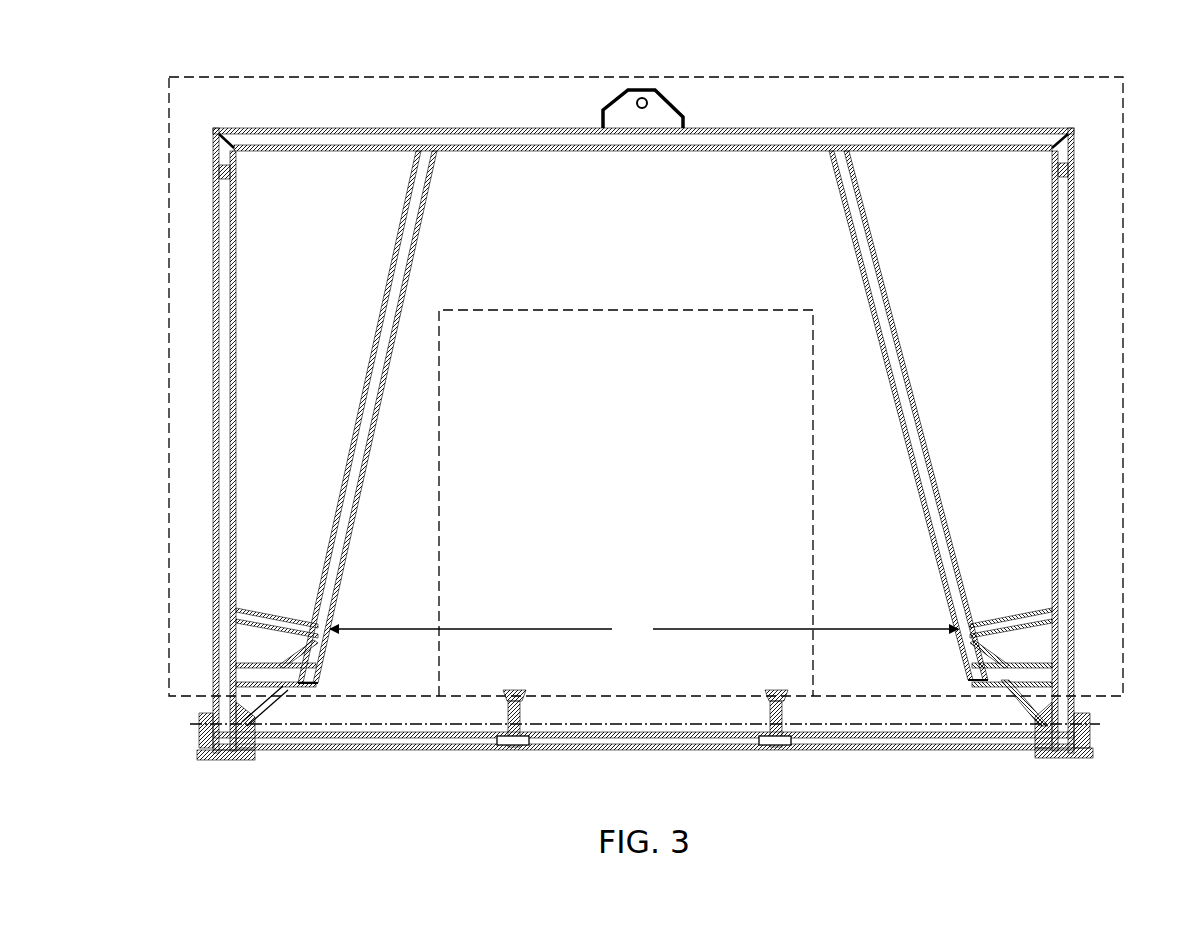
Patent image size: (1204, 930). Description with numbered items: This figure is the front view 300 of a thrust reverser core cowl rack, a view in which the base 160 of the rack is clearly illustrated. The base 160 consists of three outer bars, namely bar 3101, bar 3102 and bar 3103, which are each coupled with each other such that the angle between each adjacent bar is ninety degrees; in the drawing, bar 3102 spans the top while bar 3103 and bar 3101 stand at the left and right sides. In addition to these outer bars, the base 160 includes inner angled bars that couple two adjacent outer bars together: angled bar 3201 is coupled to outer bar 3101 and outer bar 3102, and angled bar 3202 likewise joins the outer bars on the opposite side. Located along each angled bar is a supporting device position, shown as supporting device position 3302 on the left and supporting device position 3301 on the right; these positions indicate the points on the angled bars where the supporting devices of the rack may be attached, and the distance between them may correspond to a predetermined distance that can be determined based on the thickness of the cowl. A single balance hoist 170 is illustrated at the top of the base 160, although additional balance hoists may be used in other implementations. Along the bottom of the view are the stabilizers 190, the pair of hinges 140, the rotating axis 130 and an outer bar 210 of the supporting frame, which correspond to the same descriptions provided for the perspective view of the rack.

The front view 300 is at (576, 17).
The base 160 is at (331, 70).
The balance hoist 170 is at (644, 91).
The bar 3102 is at (643, 91).
The bar 3103 is at (285, 440).
The bar 3101 is at (1128, 440).
The angled bar 3202 is at (409, 417).
The angled bar 3201 is at (866, 415).
The supporting device position 3302 is at (327, 660).
The supporting device position 3301 is at (941, 660).
The rotating axis 130 is at (458, 724).
The outer bar 210 is at (898, 747).
The hinge 140 is at (237, 758).
The stabilizer 190 is at (778, 692).